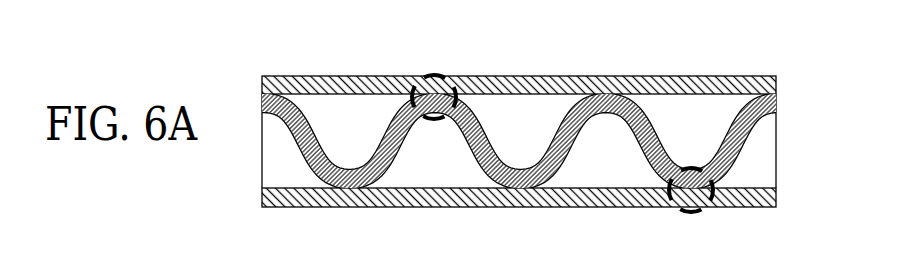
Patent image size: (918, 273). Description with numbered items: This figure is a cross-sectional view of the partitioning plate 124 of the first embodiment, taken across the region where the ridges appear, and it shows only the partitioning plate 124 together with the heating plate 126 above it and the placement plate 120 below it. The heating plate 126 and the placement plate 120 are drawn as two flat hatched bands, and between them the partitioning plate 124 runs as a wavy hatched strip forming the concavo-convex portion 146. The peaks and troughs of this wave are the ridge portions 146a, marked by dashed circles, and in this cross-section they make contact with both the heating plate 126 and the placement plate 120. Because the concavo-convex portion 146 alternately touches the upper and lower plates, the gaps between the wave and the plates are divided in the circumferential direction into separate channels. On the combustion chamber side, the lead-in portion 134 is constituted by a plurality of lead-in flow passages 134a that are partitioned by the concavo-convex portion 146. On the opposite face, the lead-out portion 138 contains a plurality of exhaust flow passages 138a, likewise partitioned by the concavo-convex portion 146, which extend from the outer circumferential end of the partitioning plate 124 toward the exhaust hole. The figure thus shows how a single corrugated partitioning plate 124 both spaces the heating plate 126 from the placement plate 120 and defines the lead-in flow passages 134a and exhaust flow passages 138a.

The placement plate 120 is at (776, 195).
The heating plate 126 is at (776, 85).
The concavo-convex portion 146 is at (357, 165).
The partitioning plate 124 is at (519, 105).
The ridge portions 146a is at (420, 77).
The lead-out portion 138 is at (517, 115).
The exhaust flow passages 138a is at (545, 67).
The lead-in portion 134 is at (420, 170).
The lead-in flow passages 134a is at (480, 217).